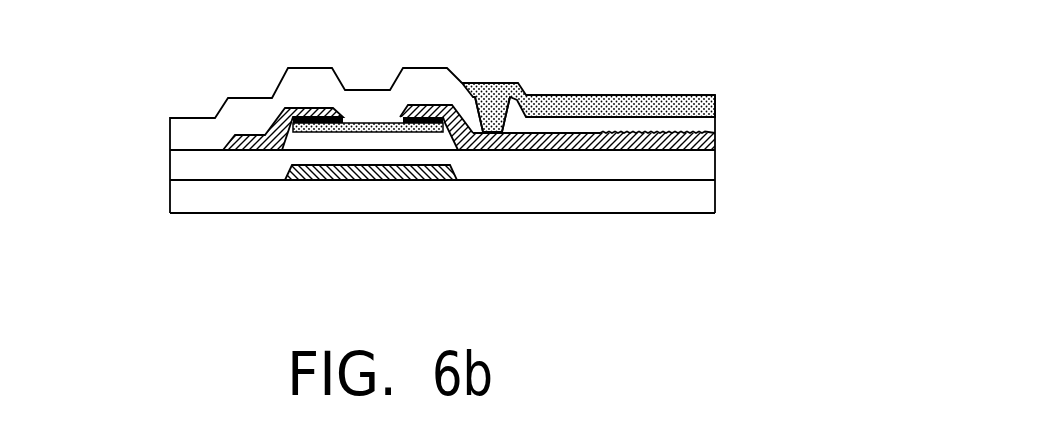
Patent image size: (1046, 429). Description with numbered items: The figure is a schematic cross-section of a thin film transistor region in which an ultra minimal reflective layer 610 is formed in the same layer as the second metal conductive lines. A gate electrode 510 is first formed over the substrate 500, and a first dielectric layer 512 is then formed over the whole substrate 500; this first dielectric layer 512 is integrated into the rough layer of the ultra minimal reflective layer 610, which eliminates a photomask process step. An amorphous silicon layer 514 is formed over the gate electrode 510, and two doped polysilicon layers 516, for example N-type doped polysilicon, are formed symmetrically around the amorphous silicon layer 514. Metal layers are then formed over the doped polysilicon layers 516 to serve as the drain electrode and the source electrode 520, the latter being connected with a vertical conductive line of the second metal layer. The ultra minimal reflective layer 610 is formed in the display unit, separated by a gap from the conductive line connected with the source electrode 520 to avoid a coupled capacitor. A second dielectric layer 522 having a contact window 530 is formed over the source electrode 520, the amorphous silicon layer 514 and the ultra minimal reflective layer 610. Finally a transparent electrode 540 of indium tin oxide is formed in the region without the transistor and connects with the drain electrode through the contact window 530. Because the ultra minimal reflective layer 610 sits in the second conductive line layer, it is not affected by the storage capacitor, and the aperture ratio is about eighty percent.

The substrate 500 is at (192, 203).
The gate electrode 510 is at (283, 165).
The first dielectric layer 512 is at (180, 160).
The amorphous silicon layer 514 is at (322, 133).
The doped polysilicon layers 516 is at (427, 133).
The source electrode 520 is at (230, 140).
The second dielectric layer 522 is at (170, 117).
The contact window 530 is at (487, 85).
The transparent electrode 540 is at (717, 100).
The ultra minimal reflective layer 610 is at (717, 142).